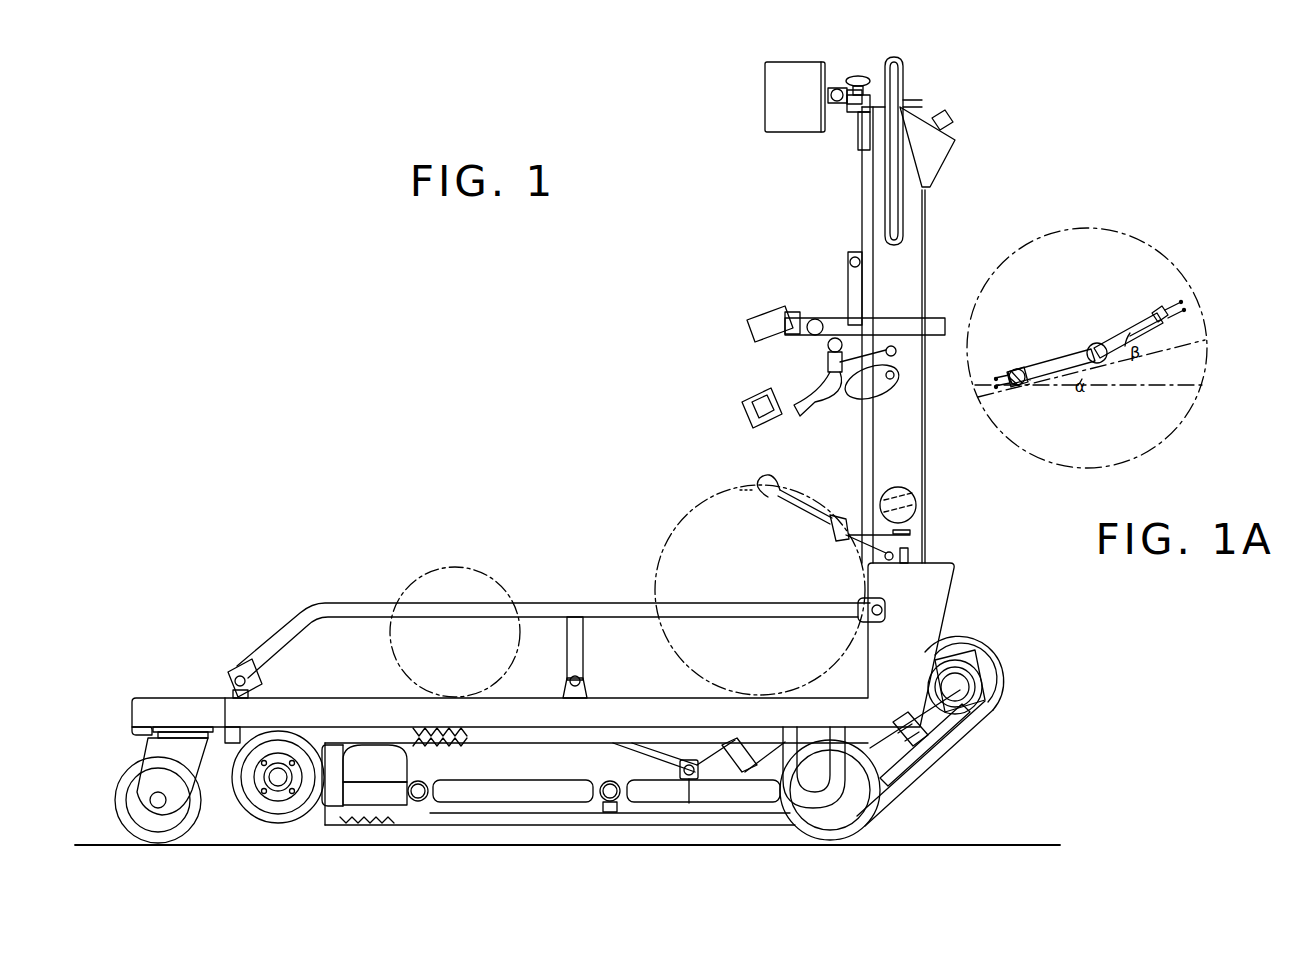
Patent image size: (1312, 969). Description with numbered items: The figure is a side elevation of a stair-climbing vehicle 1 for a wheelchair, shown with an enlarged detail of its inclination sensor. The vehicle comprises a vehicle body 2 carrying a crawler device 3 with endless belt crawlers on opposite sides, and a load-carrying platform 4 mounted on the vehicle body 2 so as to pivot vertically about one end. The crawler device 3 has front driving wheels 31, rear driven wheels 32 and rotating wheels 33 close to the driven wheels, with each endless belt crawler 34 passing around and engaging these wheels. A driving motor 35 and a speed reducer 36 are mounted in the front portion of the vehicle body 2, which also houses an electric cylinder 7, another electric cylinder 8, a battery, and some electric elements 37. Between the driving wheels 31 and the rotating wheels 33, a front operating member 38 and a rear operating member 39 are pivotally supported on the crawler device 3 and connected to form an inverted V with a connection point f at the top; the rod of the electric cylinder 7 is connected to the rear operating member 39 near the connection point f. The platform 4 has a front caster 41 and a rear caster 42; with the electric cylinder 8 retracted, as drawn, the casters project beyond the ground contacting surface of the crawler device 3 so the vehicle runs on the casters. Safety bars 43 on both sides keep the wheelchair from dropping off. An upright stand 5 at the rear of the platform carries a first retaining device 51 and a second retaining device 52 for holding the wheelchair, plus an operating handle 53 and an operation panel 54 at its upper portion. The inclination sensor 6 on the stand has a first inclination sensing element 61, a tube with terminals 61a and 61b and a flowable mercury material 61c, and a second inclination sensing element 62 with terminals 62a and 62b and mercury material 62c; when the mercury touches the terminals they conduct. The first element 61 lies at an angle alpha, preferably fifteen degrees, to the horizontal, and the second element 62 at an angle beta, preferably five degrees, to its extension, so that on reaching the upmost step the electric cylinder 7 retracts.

In FIG. 1, the stair-climbing vehicle 1 is at (552, 512).
In FIG. 1, the vehicle body 2 is at (477, 778).
In FIG. 1, the crawler device 3 is at (533, 831).
In FIG. 1, the load-carrying platform 4 is at (330, 713).
In FIG. 1, the upright stand 5 is at (905, 258).
In FIG. 1, the inclination sensor 6 is at (972, 408).
In FIG. 1A, the inclination sensor 6 is at (1070, 314).
In FIG. 1, the electric cylinder 7 is at (752, 748).
In FIG. 1, the electric cylinder 8 is at (630, 760).
In FIG. 1, the front driving wheel 31 is at (275, 812).
In FIG. 1, the rear driven wheel 32 is at (985, 672).
In FIG. 1, the rotating wheel 33 is at (885, 780).
In FIG. 1, the endless belt crawler 34 is at (980, 728).
In FIG. 1, the driving motor 35 is at (383, 770).
In FIG. 1, the speed reducer 36 is at (345, 760).
In FIG. 1, the electric elements 37 is at (887, 783).
In FIG. 1, the front operating member 38 is at (568, 795).
In FIG. 1, the rear operating member 39 is at (708, 793).
In FIG. 1, the front caster 41 is at (176, 832).
In FIG. 1, the rear caster 42 is at (852, 835).
In FIG. 1, the safety bar 43 is at (542, 610).
In FIG. 1, the first retaining device 51 is at (865, 567).
In FIG. 1, the second retaining device 52 is at (797, 317).
In FIG. 1, the operating handle 53 is at (905, 67).
In FIG. 1, the operation panel 54 is at (930, 162).
In FIG. 1A, the first inclination sensing element 61 is at (1045, 365).
In FIG. 1A, the electrically conductive terminal 61a is at (1016, 387).
In FIG. 1A, the electrically conductive terminal 61b is at (1015, 370).
In FIG. 1A, the flowable mercury material 61c is at (1044, 386).
In FIG. 1A, the second inclination sensing element 62 is at (1118, 338).
In FIG. 1A, the electrically conductive terminal 62a is at (1152, 342).
In FIG. 1A, the electrically conductive terminal 62b is at (1152, 318).
In FIG. 1A, the flowable mercury material 62c is at (1105, 362).
In FIG. 1, the connection point f is at (420, 786).